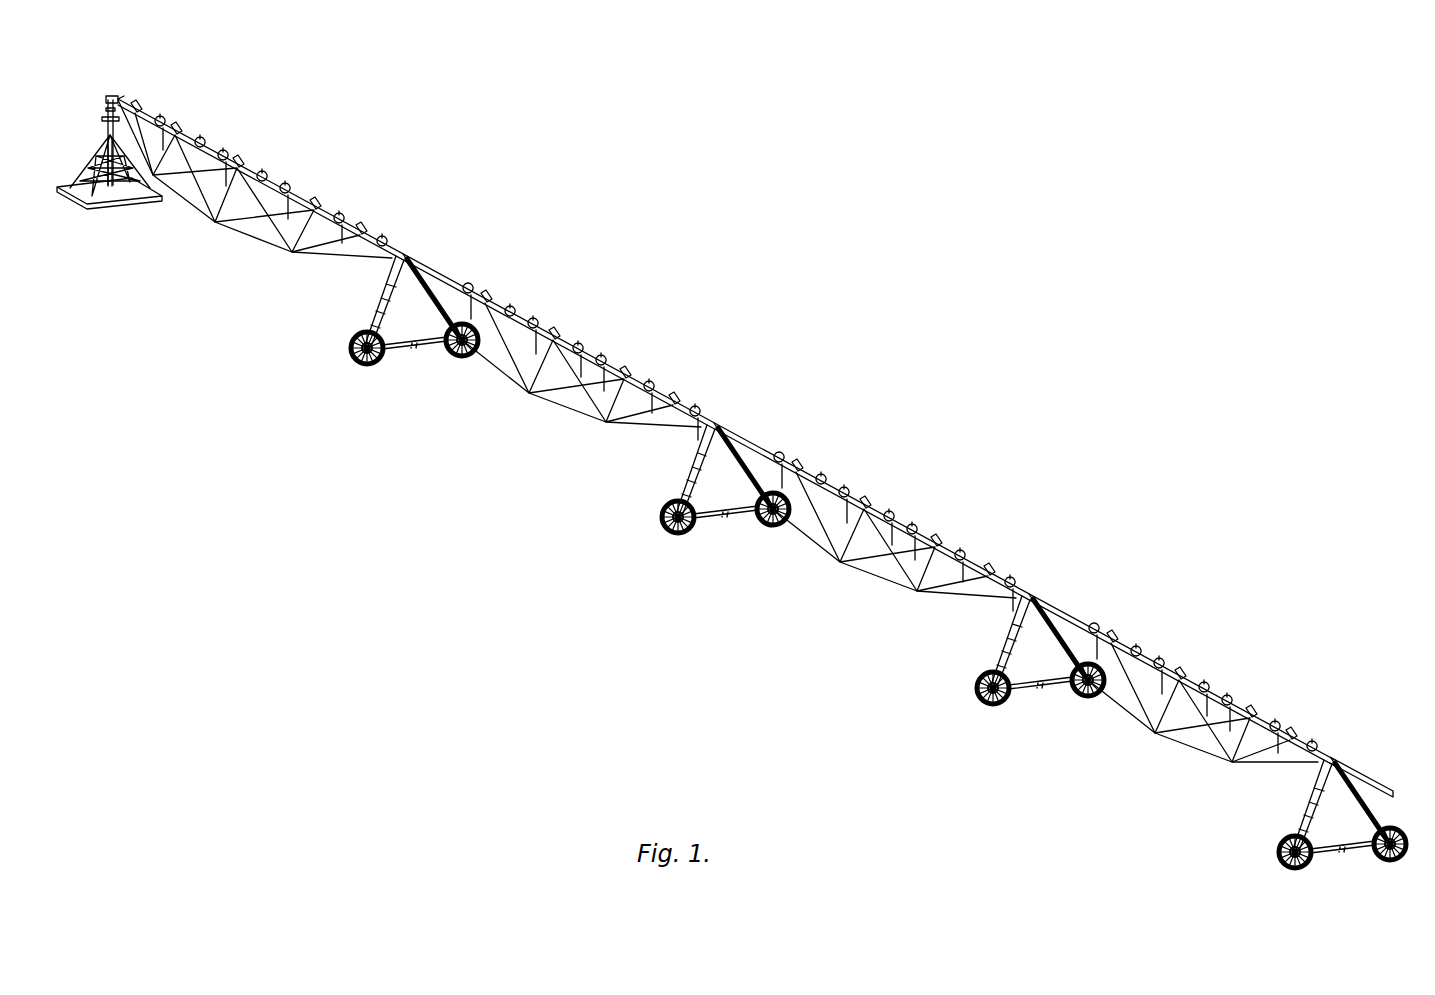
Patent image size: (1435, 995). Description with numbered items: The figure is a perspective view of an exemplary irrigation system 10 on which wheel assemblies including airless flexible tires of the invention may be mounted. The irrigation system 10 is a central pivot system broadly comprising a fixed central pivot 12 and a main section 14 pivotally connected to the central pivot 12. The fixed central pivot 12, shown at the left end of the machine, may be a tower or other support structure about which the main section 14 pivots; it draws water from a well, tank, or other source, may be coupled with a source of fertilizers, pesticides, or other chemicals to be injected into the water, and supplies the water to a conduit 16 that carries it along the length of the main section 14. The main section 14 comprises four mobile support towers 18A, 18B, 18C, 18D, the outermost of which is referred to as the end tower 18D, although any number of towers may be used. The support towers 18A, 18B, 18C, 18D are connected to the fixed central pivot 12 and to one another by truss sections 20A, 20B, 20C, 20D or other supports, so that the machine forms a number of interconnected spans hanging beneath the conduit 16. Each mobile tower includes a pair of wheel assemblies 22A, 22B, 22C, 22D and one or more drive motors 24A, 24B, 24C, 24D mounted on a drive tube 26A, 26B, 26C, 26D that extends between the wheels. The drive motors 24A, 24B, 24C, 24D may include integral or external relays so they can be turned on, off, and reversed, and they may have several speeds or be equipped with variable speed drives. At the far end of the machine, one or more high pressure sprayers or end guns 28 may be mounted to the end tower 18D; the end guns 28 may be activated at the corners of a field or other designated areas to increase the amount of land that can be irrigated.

The irrigation system 10 is at (942, 252).
The fixed central pivot 12 is at (90, 232).
The main section 14 is at (352, 190).
The conduit 16 is at (545, 340).
The mobile support tower 18A is at (432, 246).
The mobile support tower 18B is at (732, 413).
The mobile support tower 18C is at (1062, 576).
The end tower 18D is at (1343, 756).
The truss section 20A is at (220, 257).
The truss section 20B is at (526, 432).
The truss section 20C is at (835, 582).
The truss section 20D is at (1143, 746).
The wheel assembly 22A is at (350, 346).
The wheel assembly 22B is at (665, 510).
The wheel assembly 22C is at (985, 680).
The wheel assembly 22D is at (1282, 848).
The drive motor 24A is at (412, 343).
The drive motor 24B is at (722, 512).
The drive motor 24C is at (1028, 688).
The drive motor 24D is at (1340, 857).
The drive tube 26A is at (440, 340).
The drive tube 26B is at (750, 515).
The drive tube 26C is at (1062, 690).
The drive tube 26D is at (1360, 853).
The end gun 28 is at (1385, 787).